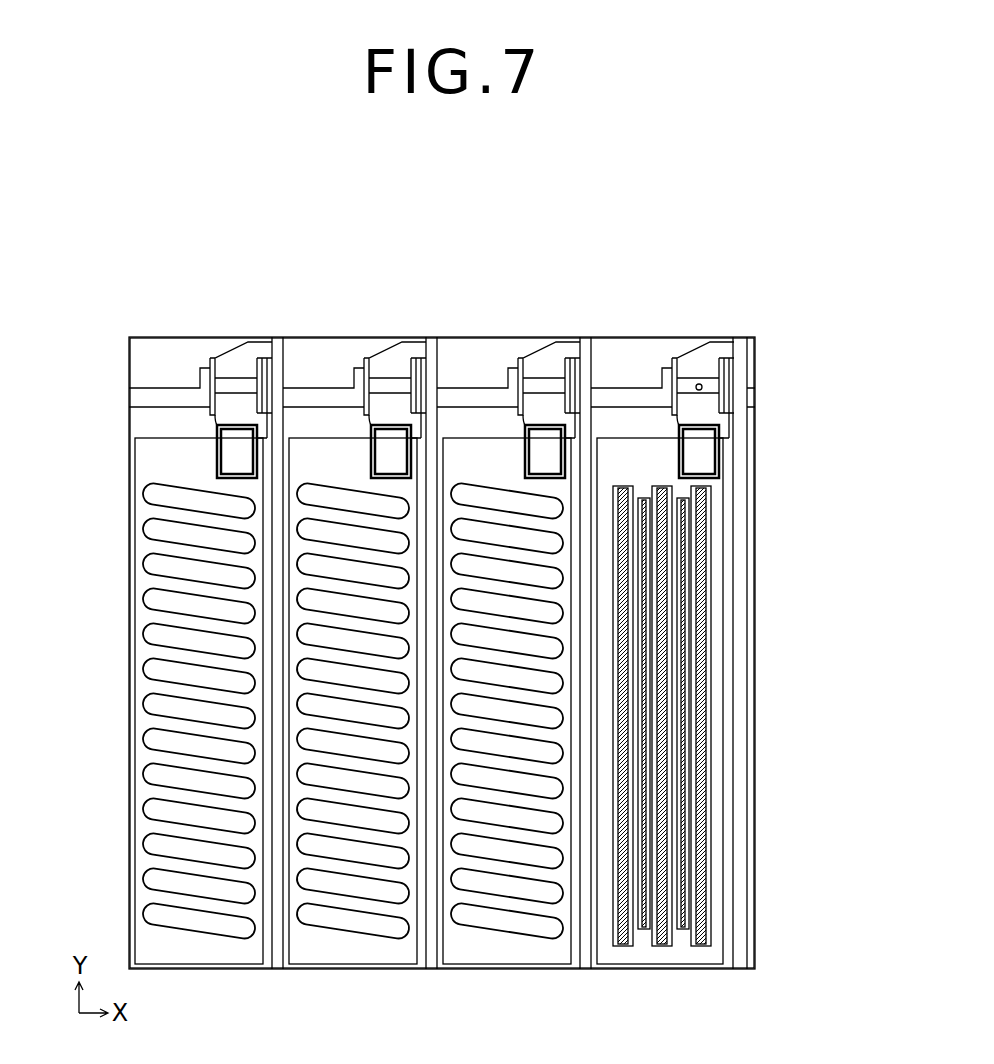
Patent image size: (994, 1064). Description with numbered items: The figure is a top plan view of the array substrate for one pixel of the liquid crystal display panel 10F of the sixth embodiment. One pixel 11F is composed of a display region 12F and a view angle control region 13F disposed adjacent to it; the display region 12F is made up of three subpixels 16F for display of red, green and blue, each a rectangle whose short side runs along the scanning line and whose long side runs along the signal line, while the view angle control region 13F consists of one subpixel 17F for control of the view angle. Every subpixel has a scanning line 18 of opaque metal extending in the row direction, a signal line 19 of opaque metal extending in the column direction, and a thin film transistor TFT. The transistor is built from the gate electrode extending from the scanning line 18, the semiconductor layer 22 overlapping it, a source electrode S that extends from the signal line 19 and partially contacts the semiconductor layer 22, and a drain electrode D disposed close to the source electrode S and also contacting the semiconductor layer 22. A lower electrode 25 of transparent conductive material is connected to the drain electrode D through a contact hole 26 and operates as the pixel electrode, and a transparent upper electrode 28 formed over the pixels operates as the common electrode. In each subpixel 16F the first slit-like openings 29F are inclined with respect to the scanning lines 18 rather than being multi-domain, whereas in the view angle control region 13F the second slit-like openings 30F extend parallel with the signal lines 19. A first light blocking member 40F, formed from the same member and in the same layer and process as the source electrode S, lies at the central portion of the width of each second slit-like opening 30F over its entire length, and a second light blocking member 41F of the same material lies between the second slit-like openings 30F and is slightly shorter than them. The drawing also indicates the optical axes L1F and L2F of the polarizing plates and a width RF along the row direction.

The liquid crystal display panel 10F is at (105, 150).
The pixel 11F is at (745, 176).
The display region 12F is at (590, 222).
The view angle control region 13F is at (745, 222).
The subpixel for display 16F is at (590, 269).
The subpixel for control of view angle 17F is at (745, 269).
The scanning line 18 is at (166, 396).
The signal line 19 is at (744, 498).
The semiconductor layer 22 is at (703, 387).
The lower electrode 25 is at (137, 888).
The contact hole 26 is at (707, 452).
The upper electrode 28 is at (150, 460).
The first slit-like opening 29F is at (158, 841).
The second slit-like opening 30F is at (712, 756).
The first light blocking member 40F is at (700, 946).
The second light blocking member 41F is at (642, 930).
The optical axis of first polarizing plate L1F is at (325, 276).
The optical axis of second polarizing plate L2F is at (354, 315).
The pixel region width RF is at (360, 1022).
The source electrode S is at (708, 370).
The drain electrode D is at (502, 440).
The thin film transistor TFT is at (533, 406).